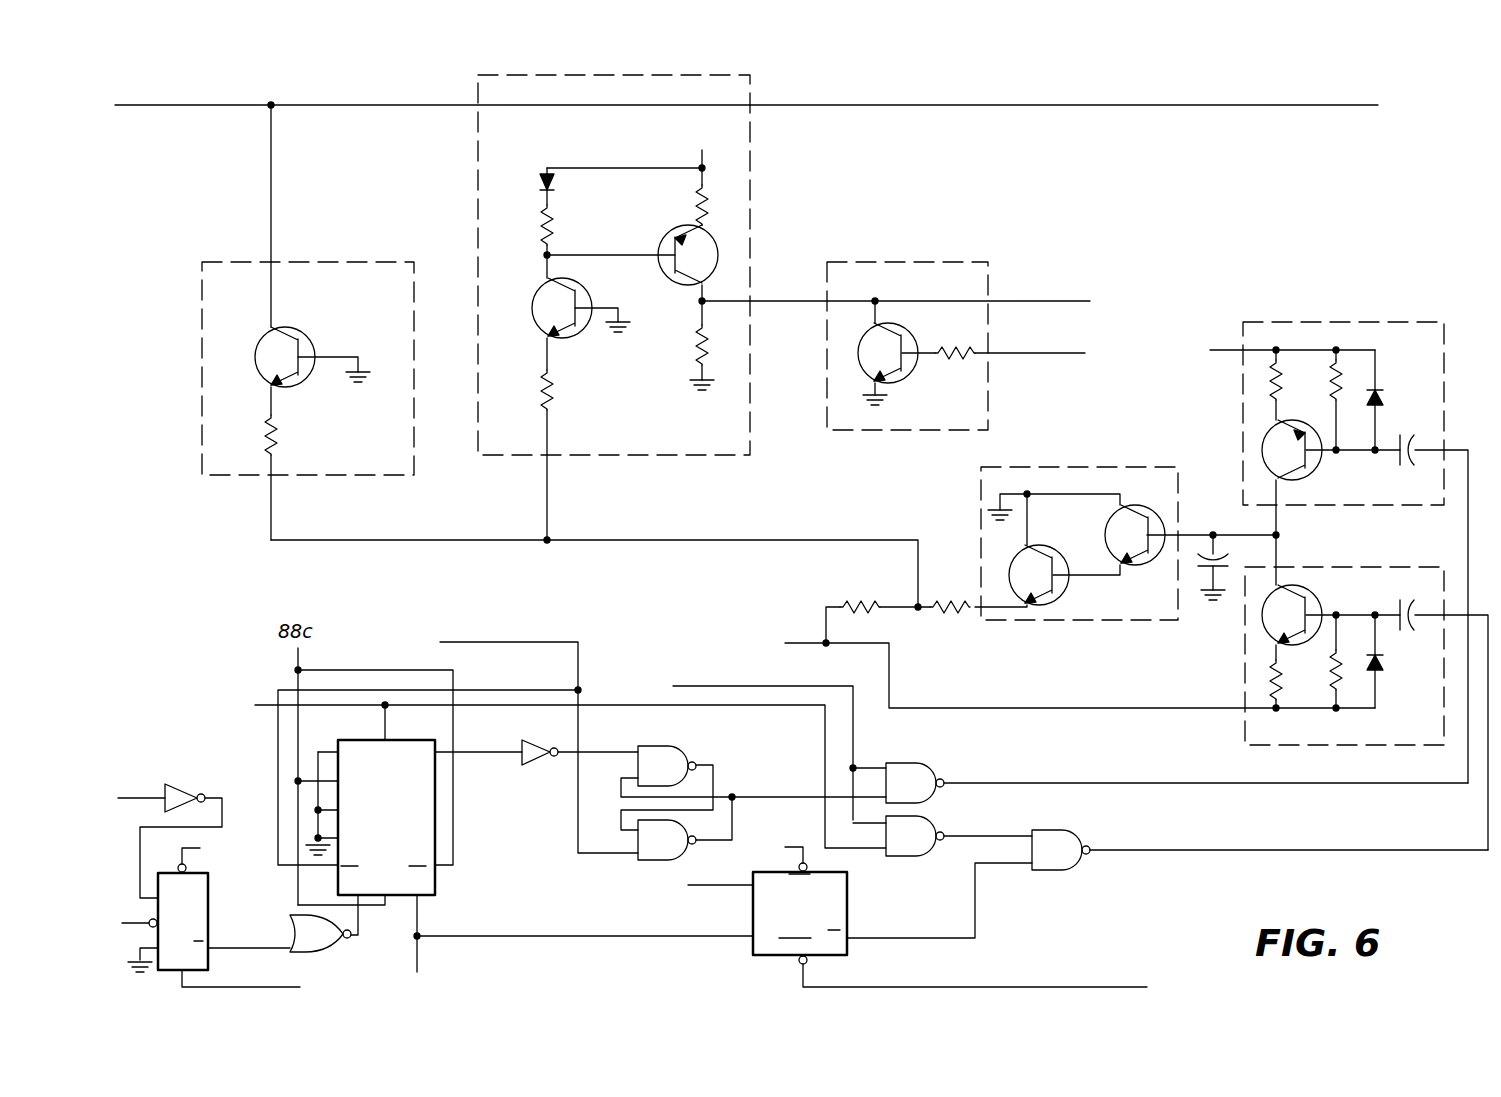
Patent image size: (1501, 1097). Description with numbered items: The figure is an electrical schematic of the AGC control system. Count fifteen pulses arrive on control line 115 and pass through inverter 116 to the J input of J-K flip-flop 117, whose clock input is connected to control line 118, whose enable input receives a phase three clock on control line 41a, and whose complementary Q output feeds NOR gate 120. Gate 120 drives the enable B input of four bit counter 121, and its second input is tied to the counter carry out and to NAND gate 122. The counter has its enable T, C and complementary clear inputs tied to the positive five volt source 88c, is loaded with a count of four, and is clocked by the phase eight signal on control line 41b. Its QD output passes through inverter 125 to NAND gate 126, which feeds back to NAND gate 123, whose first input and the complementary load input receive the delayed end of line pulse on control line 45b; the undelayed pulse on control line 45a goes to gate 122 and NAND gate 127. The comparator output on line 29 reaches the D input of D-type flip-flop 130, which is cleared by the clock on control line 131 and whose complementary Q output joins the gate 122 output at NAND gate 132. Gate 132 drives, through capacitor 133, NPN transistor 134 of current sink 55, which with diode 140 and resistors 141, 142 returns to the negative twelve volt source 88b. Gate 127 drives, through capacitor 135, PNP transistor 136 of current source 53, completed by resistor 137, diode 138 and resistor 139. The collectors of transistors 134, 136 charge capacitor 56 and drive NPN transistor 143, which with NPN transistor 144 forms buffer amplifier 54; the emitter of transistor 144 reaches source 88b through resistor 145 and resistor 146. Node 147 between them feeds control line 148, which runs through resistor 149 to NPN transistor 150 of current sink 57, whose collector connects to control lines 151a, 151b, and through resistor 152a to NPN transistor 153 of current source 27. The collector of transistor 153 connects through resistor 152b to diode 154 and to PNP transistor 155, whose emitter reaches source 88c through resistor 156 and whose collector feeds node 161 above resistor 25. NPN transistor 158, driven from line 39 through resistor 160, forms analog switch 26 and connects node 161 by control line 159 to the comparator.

The control line 151a is at (203, 104).
The control line 151b is at (938, 104).
The current source 27 is at (477, 92).
The current sink 57 is at (238, 297).
The analog switch 26 is at (864, 262).
The buffer amplifier 54 is at (1076, 467).
The current source 53 is at (1344, 322).
The current sink 55 is at (1245, 728).
The +5 volt source 88c is at (633, 149).
The −12 volt source 88b is at (1061, 670).
The control line 159 is at (1036, 300).
The line 39 is at (1028, 352).
The control line 45a is at (698, 686).
The control line 45b is at (446, 640).
The line 29 is at (720, 886).
The control line 41a is at (236, 988).
The control line 41b is at (420, 965).
The control line 131 is at (1047, 968).
The control line 148 is at (780, 540).
The control line 115 is at (126, 796).
The control line 118 is at (130, 924).
The NPN transistor 150 is at (307, 350).
The NPN transistor 153 is at (542, 313).
The PNP transistor 155 is at (675, 246).
The NPN transistor 158 is at (872, 370).
The NPN transistor 143 is at (1160, 510).
The NPN transistor 144 is at (1064, 590).
The PNP transistor 136 is at (1312, 468).
The NPN transistor 134 is at (1324, 604).
The resistor 149 is at (282, 426).
The resistor 152a is at (552, 378).
The resistor 152b is at (540, 226).
The resistor 156 is at (697, 205).
The resistor 25 is at (699, 352).
The resistor 160 is at (952, 362).
The resistor 146 is at (868, 600).
The resistor 145 is at (937, 612).
The node 147 is at (923, 600).
The node 161 is at (695, 302).
The resistor 137 is at (1332, 395).
The resistor 139 is at (1278, 400).
The resistor 141 is at (1332, 666).
The resistor 142 is at (1281, 684).
The diode 154 is at (542, 180).
The diode 138 is at (1383, 399).
The diode 140 is at (1384, 676).
The capacitor 135 is at (1402, 466).
The capacitor 133 is at (1403, 604).
The capacitor 56 is at (1206, 593).
The inverter 116 is at (181, 790).
The inverter 125 is at (536, 760).
The J-K flip-flop 117 is at (202, 899).
The D-type flip-flop 130 is at (830, 915).
The four bit counter 121 is at (414, 816).
The NOR gate 120 is at (332, 942).
The NAND gate 126 is at (672, 756).
The NAND gate 123 is at (652, 851).
The NAND gate 127 is at (924, 772).
The NAND gate 122 is at (928, 825).
The NAND gate 132 is at (1072, 837).